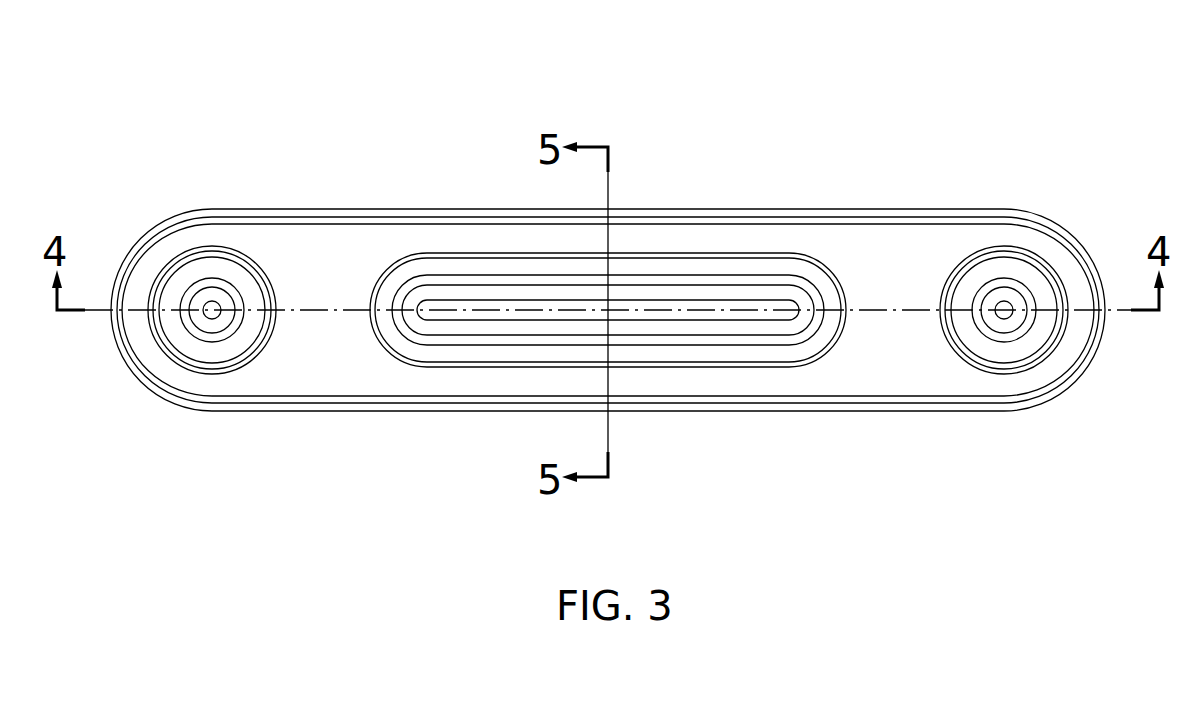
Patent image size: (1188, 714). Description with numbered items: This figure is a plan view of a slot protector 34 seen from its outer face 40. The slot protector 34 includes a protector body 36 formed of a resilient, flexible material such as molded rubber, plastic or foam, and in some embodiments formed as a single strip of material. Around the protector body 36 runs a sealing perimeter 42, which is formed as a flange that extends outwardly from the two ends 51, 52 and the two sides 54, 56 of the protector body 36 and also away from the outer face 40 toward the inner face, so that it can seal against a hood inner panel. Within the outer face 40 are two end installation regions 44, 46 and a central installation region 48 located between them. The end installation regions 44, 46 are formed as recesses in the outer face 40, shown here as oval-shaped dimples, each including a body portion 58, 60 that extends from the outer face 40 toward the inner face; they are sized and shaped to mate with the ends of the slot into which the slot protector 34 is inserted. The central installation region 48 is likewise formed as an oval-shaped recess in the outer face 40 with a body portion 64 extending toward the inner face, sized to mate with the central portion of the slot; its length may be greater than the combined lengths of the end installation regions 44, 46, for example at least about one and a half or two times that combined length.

The slot protector 34 is at (817, 131).
The protector body 36 is at (882, 268).
The outer face 40 is at (312, 243).
The sealing perimeter 42 is at (344, 384).
The end installation region 44 is at (174, 363).
The end installation region 46 is at (1042, 363).
The central installation region 48 is at (478, 371).
The end 51 is at (183, 239).
The end 52 is at (1033, 239).
The side 54 is at (470, 232).
The side 56 is at (811, 383).
The body portion 58 is at (221, 342).
The body portion 60 is at (995, 342).
The body portion 64 is at (722, 290).